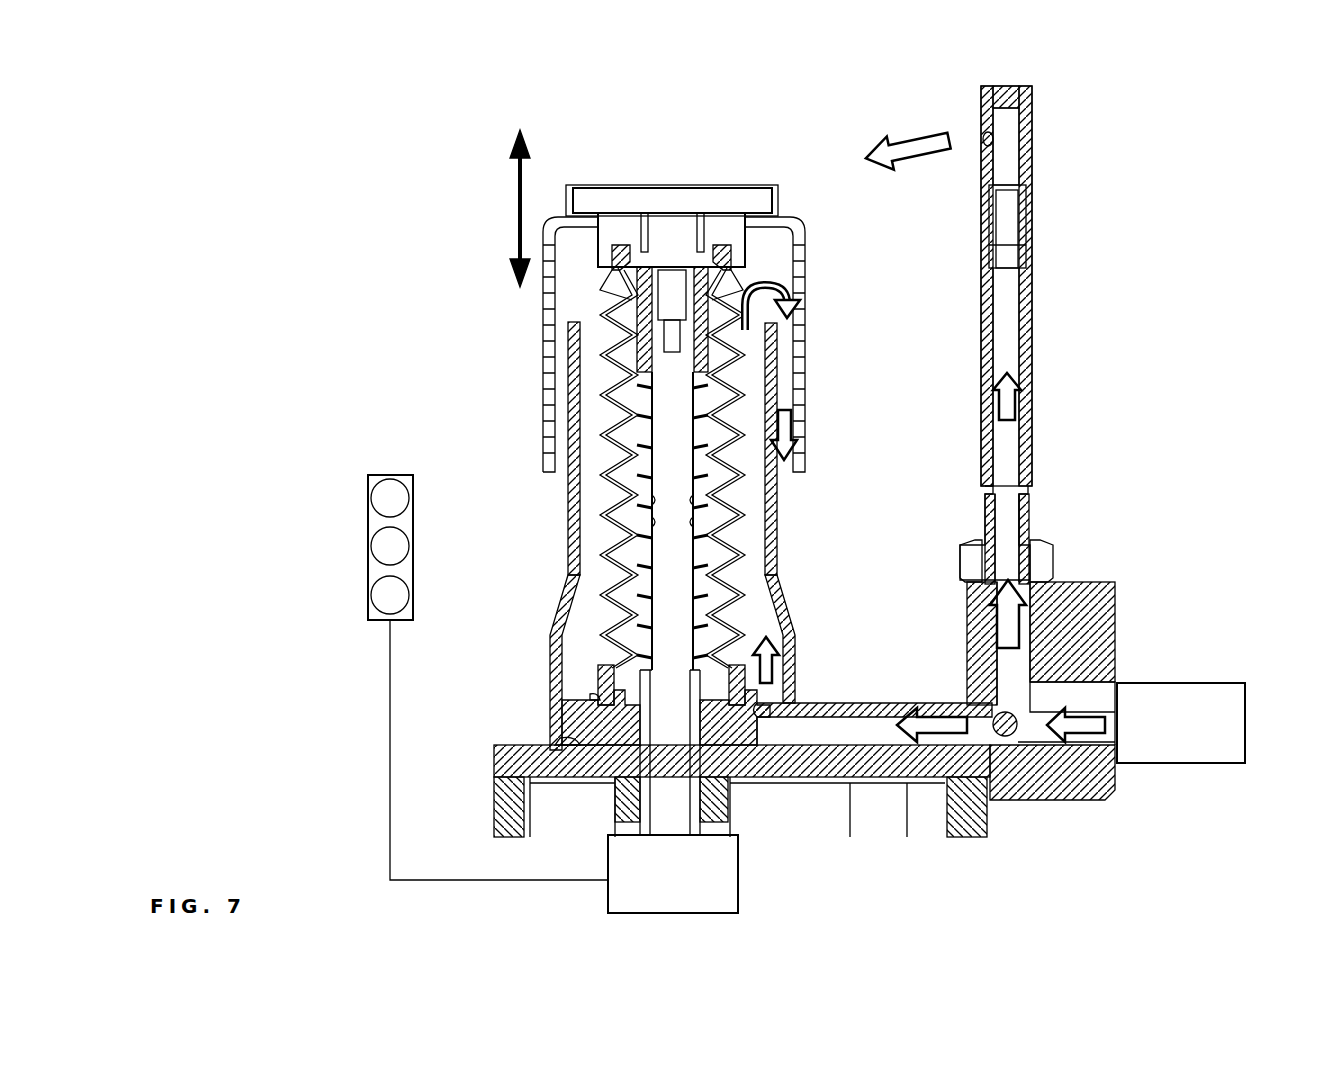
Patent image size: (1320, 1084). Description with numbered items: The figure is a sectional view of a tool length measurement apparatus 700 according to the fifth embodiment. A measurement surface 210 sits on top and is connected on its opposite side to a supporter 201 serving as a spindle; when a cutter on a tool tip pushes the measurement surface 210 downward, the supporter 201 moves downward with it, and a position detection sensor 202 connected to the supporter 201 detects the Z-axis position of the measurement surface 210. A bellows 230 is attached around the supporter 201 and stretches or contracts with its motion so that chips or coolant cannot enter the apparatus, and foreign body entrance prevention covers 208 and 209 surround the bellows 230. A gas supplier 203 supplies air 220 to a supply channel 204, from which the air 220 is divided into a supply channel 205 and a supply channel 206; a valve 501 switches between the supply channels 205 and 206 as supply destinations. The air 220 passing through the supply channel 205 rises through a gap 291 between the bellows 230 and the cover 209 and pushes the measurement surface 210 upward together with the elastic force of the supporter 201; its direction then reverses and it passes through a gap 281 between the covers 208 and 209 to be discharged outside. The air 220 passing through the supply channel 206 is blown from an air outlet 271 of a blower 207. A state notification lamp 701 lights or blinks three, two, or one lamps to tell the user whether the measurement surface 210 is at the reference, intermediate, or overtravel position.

The tool length measurement apparatus 700 is at (470, 216).
The measurement surface 210 is at (665, 182).
The foreign body entrance prevention cover 208 is at (543, 330).
The supporter 201 is at (650, 603).
The bellows 230 is at (585, 496).
The gap 291 is at (755, 512).
The gap 281 is at (782, 375).
The foreign body entrance prevention cover 209 is at (782, 562).
The supply channel 205 is at (878, 760).
The air 220 is at (905, 135).
The air outlet 271 is at (985, 140).
The blower 207 is at (1033, 146).
The supply channel 206 is at (1028, 509).
The supply channel 204 is at (1032, 750).
The valve 501 is at (1003, 735).
The gas supplier 203 is at (1186, 682).
The position detection sensor 202 is at (740, 872).
The state notification lamp 701 is at (393, 475).